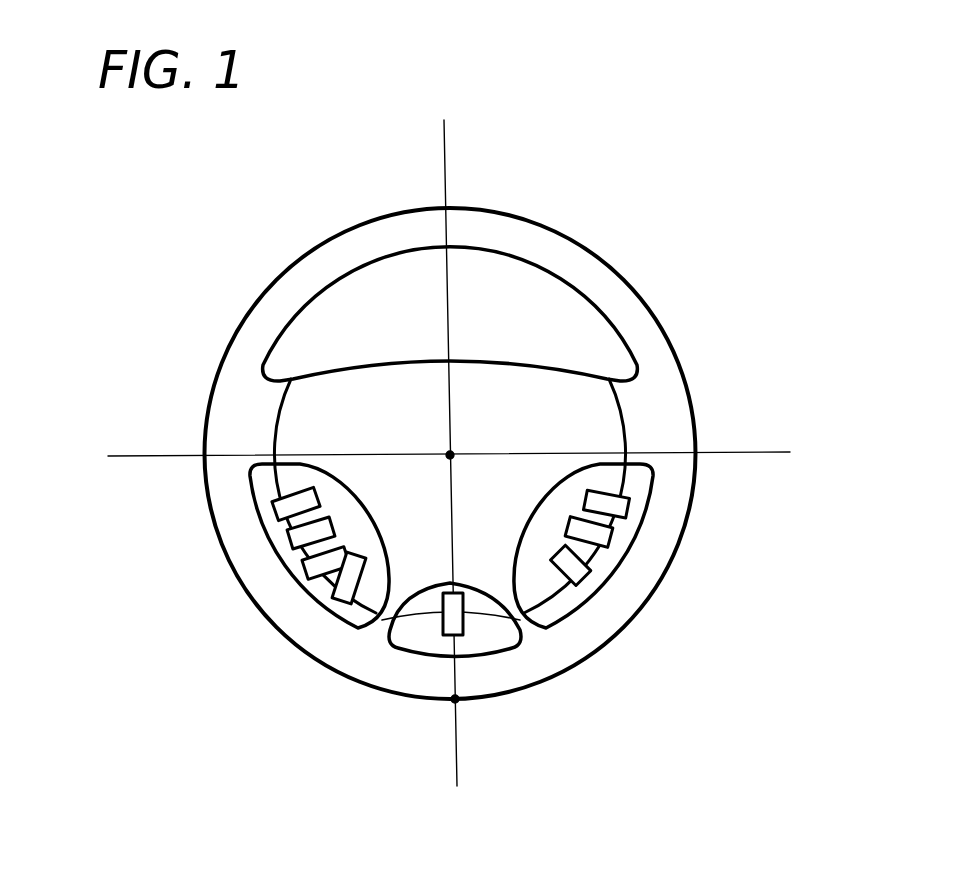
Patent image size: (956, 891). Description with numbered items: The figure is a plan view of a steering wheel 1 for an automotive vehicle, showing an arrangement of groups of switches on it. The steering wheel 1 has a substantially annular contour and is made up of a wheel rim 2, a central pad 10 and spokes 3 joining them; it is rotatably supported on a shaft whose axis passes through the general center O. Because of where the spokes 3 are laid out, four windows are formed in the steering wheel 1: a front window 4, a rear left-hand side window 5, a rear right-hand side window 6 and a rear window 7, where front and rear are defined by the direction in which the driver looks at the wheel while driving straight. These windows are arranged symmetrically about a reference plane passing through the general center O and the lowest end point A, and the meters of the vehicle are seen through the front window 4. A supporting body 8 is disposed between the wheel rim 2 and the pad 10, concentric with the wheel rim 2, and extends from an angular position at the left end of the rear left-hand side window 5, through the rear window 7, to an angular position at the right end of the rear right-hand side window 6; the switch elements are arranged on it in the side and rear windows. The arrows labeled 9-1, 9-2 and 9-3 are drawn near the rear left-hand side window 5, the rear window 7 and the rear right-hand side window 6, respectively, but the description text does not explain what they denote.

The steering wheel 1 is at (443, 476).
The wheel rim 2 is at (375, 248).
The spokes 3 is at (632, 422).
The front window 4 is at (498, 283).
The rear left-hand side window 5 is at (287, 558).
The rear right-hand side window 6 is at (607, 573).
The rear window 7 is at (423, 643).
The supporting body 8 is at (343, 512).
The left operating direction 9-1 is at (327, 595).
The lower operating direction 9-2 is at (487, 640).
The right operating direction 9-3 is at (573, 597).
The pad 10 is at (540, 390).